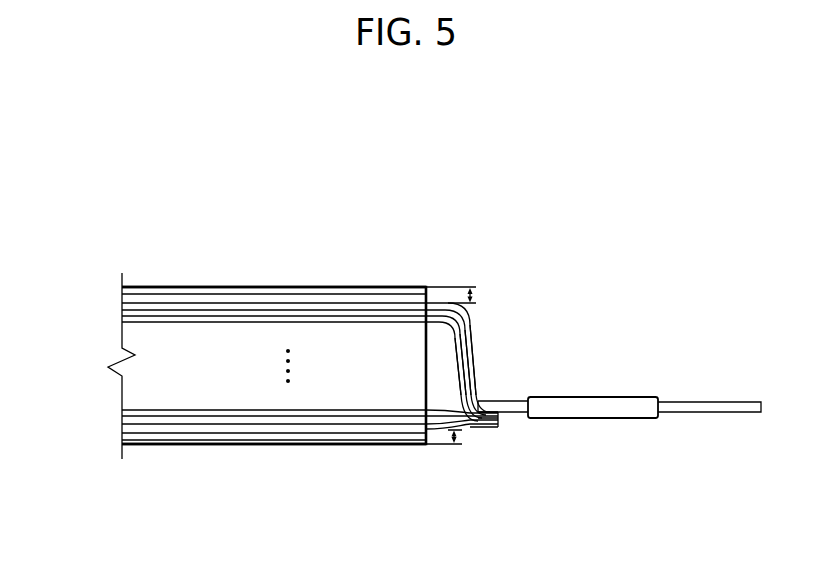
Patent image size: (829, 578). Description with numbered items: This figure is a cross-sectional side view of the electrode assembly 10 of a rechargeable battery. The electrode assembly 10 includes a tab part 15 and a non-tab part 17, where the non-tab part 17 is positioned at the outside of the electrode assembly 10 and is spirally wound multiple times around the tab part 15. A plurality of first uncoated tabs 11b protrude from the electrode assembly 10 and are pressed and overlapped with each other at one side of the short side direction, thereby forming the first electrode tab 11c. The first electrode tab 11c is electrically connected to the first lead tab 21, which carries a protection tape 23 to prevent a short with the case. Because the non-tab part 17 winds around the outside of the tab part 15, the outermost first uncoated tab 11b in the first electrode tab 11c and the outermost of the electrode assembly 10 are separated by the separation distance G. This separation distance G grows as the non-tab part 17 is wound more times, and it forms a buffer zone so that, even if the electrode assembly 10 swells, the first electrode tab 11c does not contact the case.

The electrode assembly 10 is at (402, 458).
The first uncoated tabs 11b is at (458, 304).
The first electrode tab 11c is at (483, 324).
The tab part 15 is at (105, 308).
The non-tab part 17 is at (110, 298).
The first lead tab 21 is at (705, 404).
The protection tape 23 is at (597, 404).
The separation distance G is at (492, 457).